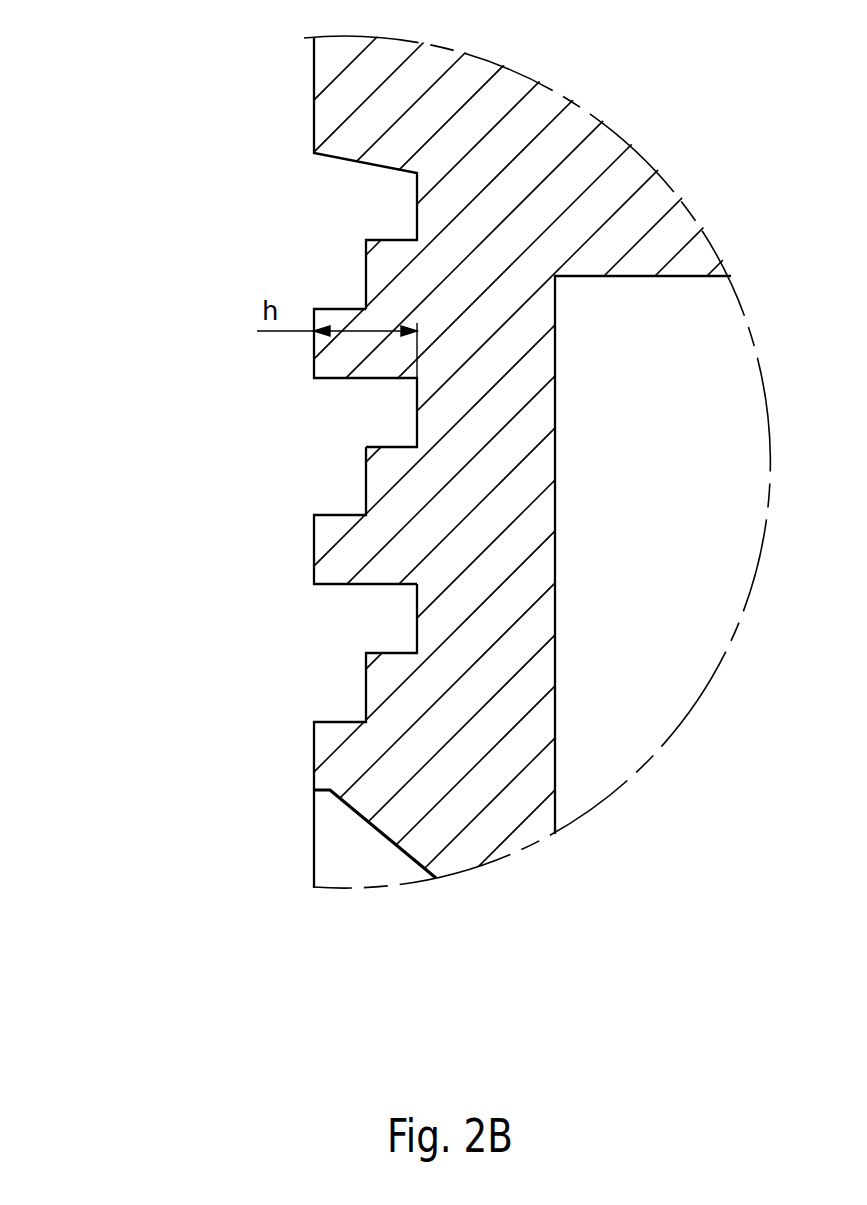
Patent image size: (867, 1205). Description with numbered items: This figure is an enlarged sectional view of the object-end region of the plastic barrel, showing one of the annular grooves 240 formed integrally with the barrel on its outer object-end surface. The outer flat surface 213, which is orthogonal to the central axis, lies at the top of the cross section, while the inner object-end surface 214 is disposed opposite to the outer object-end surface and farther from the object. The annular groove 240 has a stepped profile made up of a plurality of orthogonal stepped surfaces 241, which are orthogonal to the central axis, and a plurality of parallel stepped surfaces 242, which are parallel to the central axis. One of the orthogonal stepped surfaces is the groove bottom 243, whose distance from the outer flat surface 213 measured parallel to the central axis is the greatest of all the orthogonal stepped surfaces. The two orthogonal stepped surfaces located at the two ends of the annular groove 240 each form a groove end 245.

The outer flat surface 213 is at (314, 98).
The inner object-end surface 214 is at (555, 355).
The annular grooves 240 is at (246, 446).
The orthogonal stepped surfaces 241 is at (366, 481).
The parallel stepped surfaces 242 is at (367, 379).
The groove bottom 243 is at (417, 412).
The groove end 245 is at (313, 362).